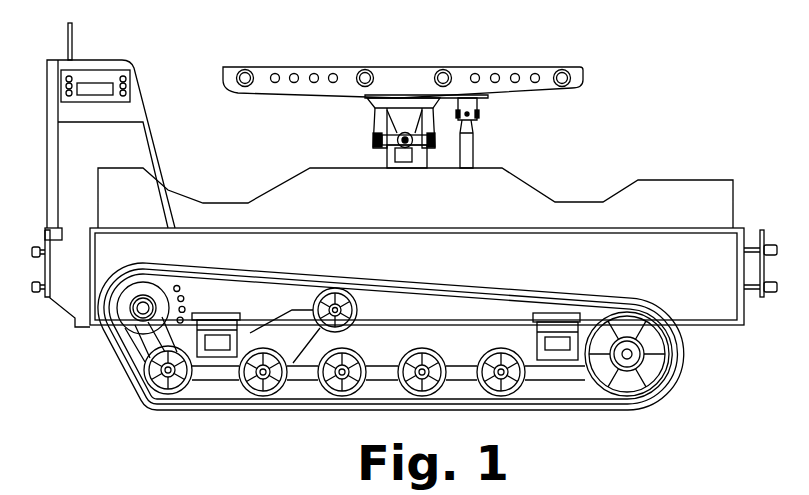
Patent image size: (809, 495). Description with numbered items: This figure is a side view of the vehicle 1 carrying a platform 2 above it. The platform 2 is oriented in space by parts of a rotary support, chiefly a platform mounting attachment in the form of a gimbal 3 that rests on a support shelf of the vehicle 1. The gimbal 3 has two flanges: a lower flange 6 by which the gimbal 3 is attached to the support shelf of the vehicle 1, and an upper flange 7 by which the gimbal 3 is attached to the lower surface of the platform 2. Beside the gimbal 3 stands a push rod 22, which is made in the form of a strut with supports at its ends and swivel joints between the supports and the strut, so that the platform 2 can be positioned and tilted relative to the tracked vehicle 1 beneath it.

The vehicle body 1 is at (578, 250).
The boom 2 is at (407, 75).
The pivot shaft 3 is at (380, 135).
The base block 6 is at (397, 157).
The mounting bracket 7 is at (395, 102).
The support column 22 is at (468, 147).